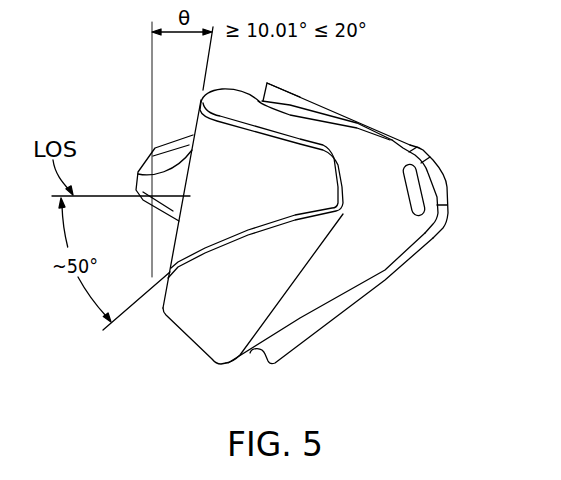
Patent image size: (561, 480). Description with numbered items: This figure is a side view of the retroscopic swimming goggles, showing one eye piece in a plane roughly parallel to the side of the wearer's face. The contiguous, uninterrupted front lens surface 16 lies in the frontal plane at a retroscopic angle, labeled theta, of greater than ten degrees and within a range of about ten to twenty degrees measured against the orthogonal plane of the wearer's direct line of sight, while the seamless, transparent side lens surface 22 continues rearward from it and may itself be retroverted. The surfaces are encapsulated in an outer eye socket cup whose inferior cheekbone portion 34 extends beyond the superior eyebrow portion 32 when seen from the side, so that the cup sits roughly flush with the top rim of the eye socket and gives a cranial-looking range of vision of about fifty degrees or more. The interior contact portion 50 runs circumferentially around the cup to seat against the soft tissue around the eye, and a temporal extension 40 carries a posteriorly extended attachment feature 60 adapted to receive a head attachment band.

The front lens surface 16 is at (158, 148).
The side lens surface 22 is at (290, 173).
The superior eyebrow portion 32 is at (215, 107).
The inferior cheekbone portion 34 is at (202, 351).
The temporal extension 40 is at (377, 180).
The interior contact portion 50 is at (359, 120).
The attachment feature 60 is at (427, 205).